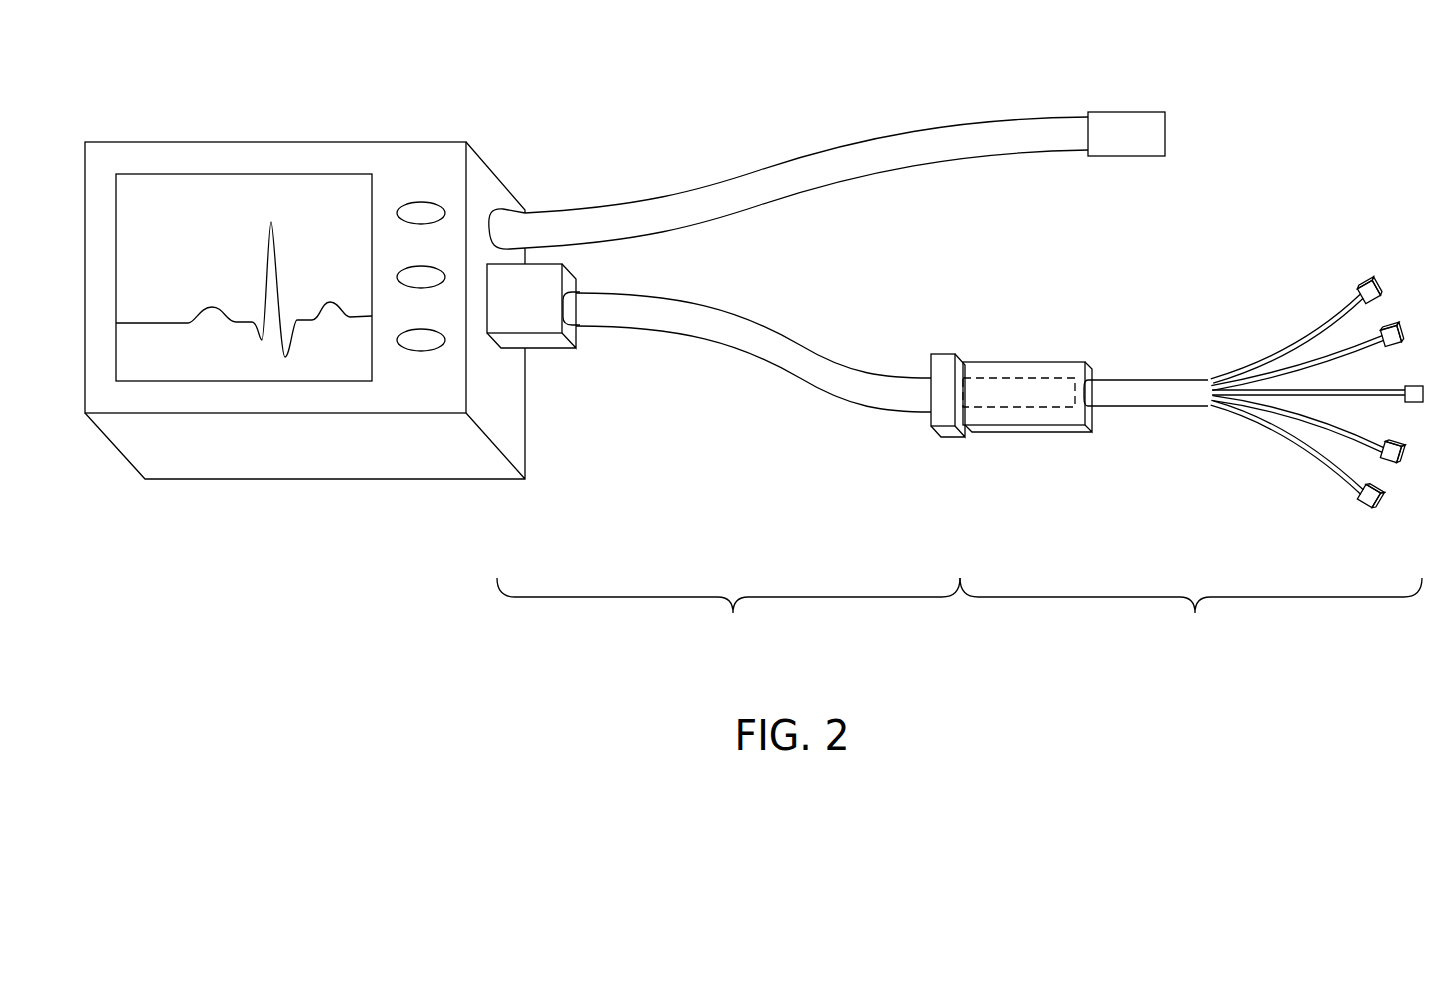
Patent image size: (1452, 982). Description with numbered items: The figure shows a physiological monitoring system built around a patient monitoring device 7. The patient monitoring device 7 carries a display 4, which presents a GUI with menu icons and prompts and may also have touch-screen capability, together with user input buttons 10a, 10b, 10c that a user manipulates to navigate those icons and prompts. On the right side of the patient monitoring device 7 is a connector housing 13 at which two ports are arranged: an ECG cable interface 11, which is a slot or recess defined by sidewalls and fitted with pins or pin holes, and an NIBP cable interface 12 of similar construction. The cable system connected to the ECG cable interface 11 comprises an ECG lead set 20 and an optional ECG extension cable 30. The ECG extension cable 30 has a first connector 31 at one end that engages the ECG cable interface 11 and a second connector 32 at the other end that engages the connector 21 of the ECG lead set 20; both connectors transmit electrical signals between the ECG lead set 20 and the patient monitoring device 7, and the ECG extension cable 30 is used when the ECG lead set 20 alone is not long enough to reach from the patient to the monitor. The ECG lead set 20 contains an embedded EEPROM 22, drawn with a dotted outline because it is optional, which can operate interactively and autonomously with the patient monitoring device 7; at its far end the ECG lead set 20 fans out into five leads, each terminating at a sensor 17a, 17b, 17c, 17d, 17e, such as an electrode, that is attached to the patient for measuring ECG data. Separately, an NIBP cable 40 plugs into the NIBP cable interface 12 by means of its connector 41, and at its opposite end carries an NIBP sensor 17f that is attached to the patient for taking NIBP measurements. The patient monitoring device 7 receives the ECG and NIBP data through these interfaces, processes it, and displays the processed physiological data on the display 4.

The patient monitoring device 7 is at (180, 142).
The display 4 is at (253, 174).
The user input button 10a is at (421, 202).
The user input button 10b is at (438, 269).
The user input button 10c is at (421, 351).
The NIBP cable interface 12 is at (500, 206).
The ECG cable interface 11 is at (496, 345).
The connector housing 13 is at (503, 256).
The NIBP cable 40 is at (795, 155).
The connector 41 is at (498, 230).
The NIBP sensor 17f is at (1125, 112).
The ECG extension cable 30 is at (728, 468).
The first connector 31 is at (577, 337).
The second connector 32 is at (940, 354).
The connector 21 is at (1005, 362).
The EEPROM 22 is at (1050, 378).
The ECG lead set 20 is at (1191, 511).
The sensor 17a is at (1360, 276).
The sensor 17b is at (1400, 326).
The sensor 17c is at (1418, 385).
The sensor 17d is at (1403, 458).
The sensor 17e is at (1383, 510).